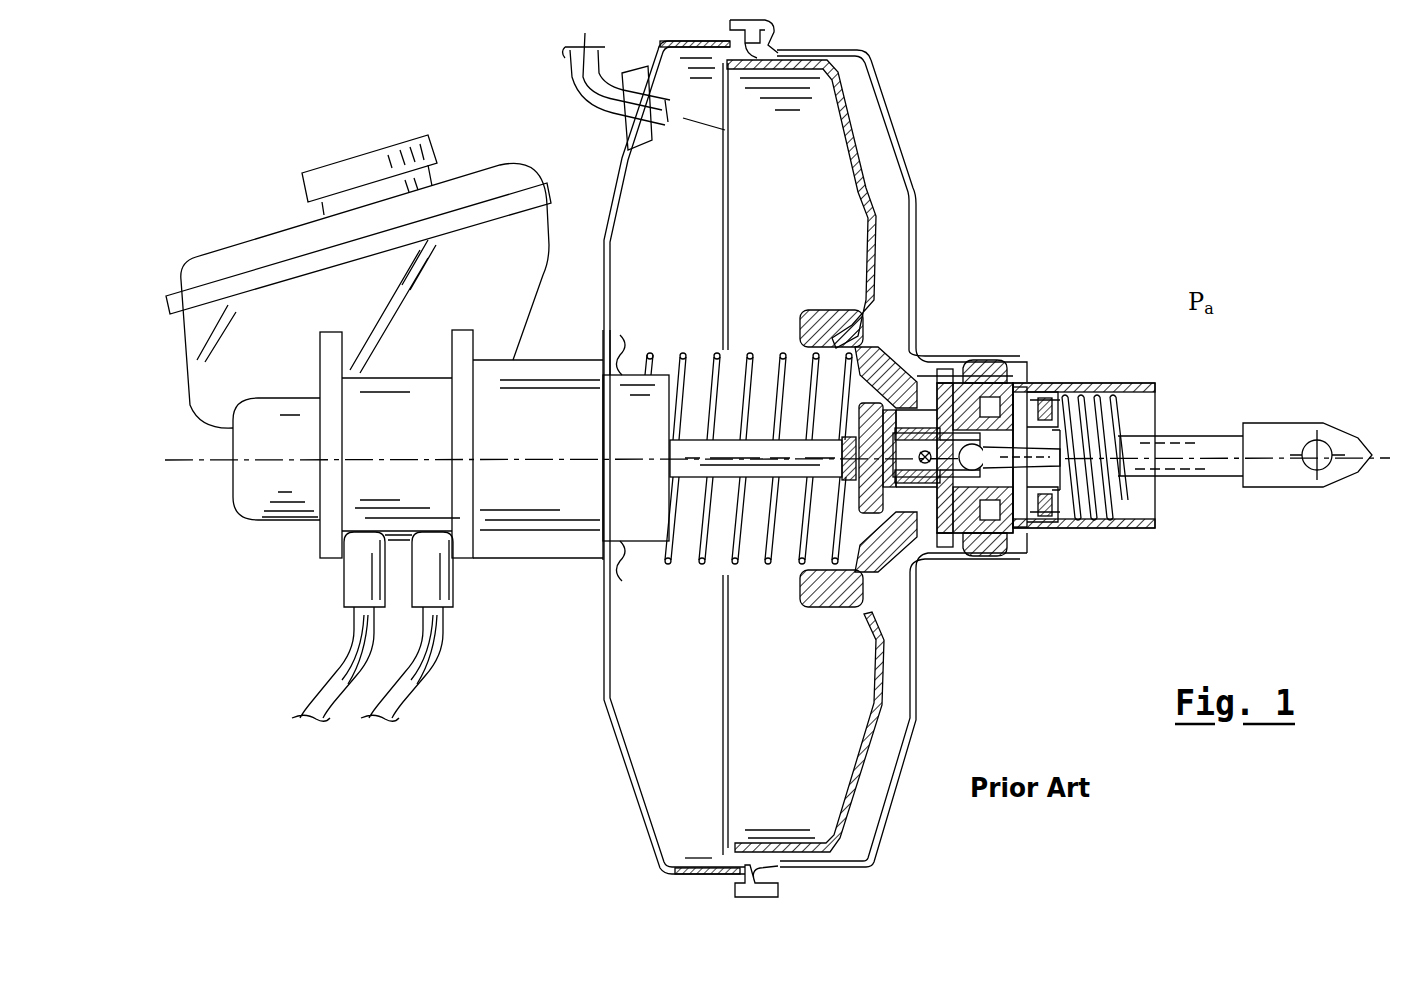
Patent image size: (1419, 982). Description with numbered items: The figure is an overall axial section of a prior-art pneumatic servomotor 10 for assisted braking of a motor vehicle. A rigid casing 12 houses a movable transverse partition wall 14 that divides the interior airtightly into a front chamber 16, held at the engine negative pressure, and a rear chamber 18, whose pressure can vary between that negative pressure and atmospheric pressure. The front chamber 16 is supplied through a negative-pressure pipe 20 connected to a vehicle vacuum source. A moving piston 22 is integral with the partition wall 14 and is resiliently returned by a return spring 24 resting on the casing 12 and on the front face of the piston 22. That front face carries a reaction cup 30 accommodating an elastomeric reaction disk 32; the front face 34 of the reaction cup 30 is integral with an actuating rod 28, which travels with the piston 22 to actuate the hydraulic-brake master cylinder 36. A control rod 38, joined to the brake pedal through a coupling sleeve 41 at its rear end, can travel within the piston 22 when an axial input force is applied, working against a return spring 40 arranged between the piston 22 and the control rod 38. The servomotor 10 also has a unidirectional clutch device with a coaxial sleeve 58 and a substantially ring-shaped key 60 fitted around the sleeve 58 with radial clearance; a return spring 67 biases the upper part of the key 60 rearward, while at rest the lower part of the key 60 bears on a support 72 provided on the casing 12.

The pneumatic servomotor 10 is at (1090, 207).
The rigid casing 12 is at (918, 272).
The transverse partition wall 14 is at (866, 155).
The front chamber 16 is at (750, 448).
The rear chamber 18 is at (895, 636).
The negative-pressure pipe 20 is at (567, 87).
The moving piston 22 is at (918, 392).
The return spring 24 is at (713, 565).
The actuating rod 28 is at (690, 470).
The reaction cup 30 is at (870, 410).
The reaction disk 32 is at (856, 400).
The front face of the reaction cup 34 is at (850, 494).
The hydraulic-brake master cylinder 36 is at (372, 482).
The control rod 38 is at (1232, 472).
The return spring 40 is at (1110, 525).
The coupling sleeve 41 is at (1275, 434).
The coaxial sleeve 58 is at (1012, 548).
The ring-shaped key 60 is at (948, 548).
The return spring 67 is at (985, 347).
The support 72 is at (945, 525).